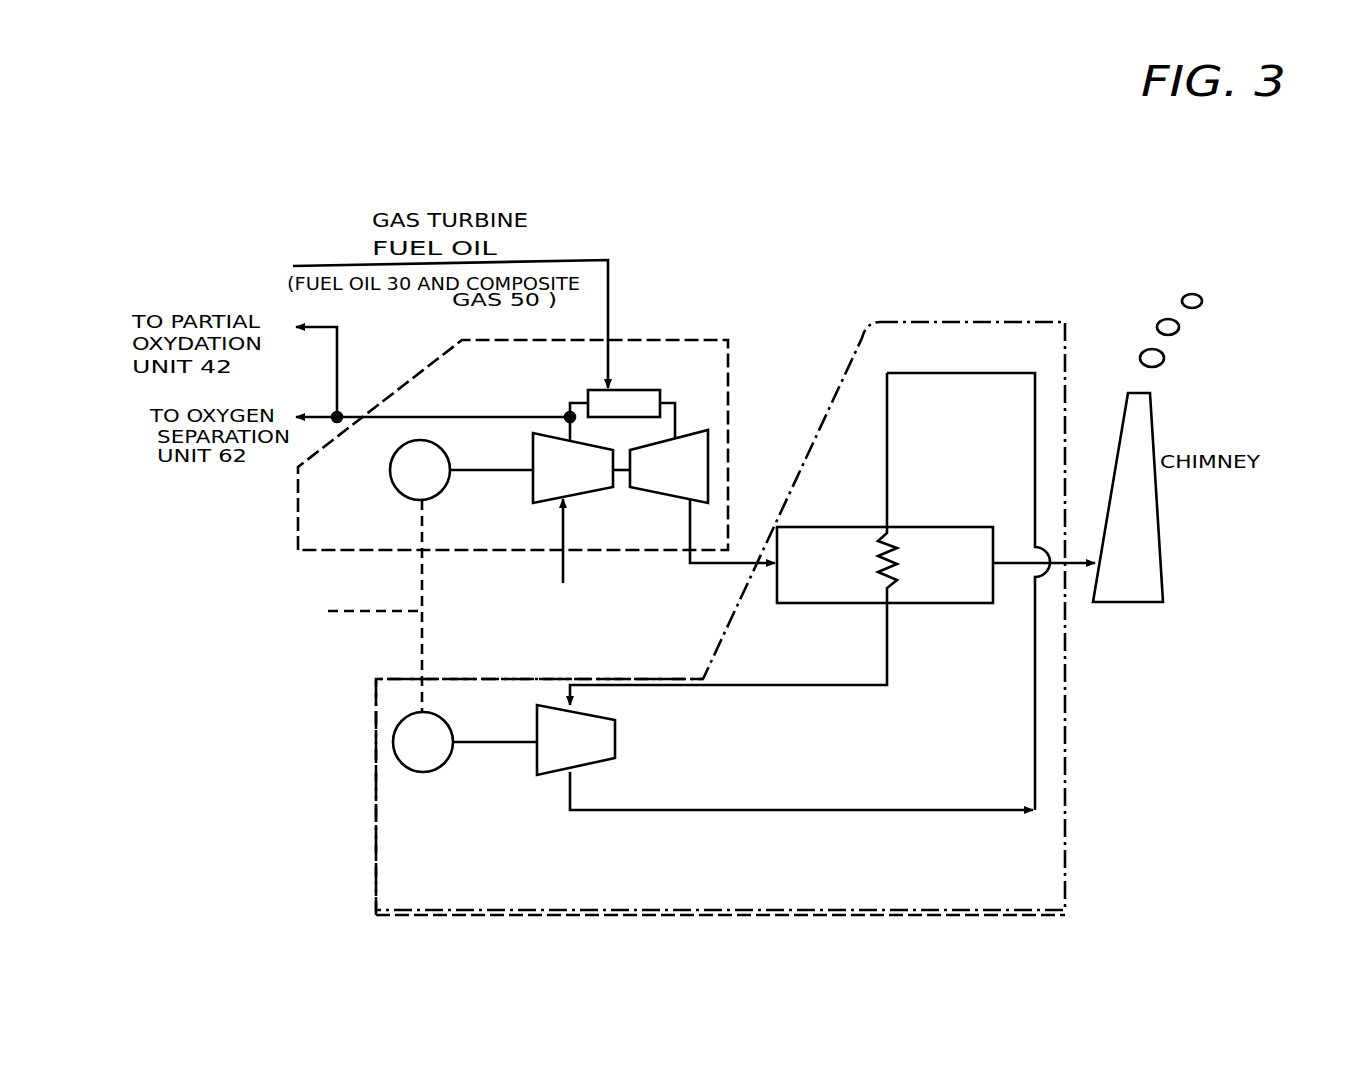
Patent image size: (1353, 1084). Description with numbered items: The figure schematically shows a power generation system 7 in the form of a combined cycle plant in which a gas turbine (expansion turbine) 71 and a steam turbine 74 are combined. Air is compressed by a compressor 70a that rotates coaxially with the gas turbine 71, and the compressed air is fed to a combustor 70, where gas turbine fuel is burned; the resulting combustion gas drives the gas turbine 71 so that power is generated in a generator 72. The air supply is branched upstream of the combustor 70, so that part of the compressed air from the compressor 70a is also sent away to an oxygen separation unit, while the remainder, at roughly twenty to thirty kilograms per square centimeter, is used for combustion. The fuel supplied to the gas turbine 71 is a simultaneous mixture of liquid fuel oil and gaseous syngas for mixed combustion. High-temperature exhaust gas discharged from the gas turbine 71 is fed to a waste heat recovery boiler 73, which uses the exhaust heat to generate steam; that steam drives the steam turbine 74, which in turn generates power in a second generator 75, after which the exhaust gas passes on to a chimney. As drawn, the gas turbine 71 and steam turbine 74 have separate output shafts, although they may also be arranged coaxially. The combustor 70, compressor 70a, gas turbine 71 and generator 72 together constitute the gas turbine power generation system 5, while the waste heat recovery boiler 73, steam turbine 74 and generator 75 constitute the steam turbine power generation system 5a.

The gas turbine power generation system 5 is at (295, 497).
The steam turbine power generation system 5a is at (376, 818).
The power generation system 7 is at (933, 168).
The combustor 70 is at (588, 394).
The compressor 70a is at (533, 495).
The gas turbine 71 is at (690, 432).
The generator 72 is at (405, 497).
The waste heat recovery boiler 73 is at (823, 527).
The steam turbine 74 is at (557, 776).
The generator 75 is at (420, 774).